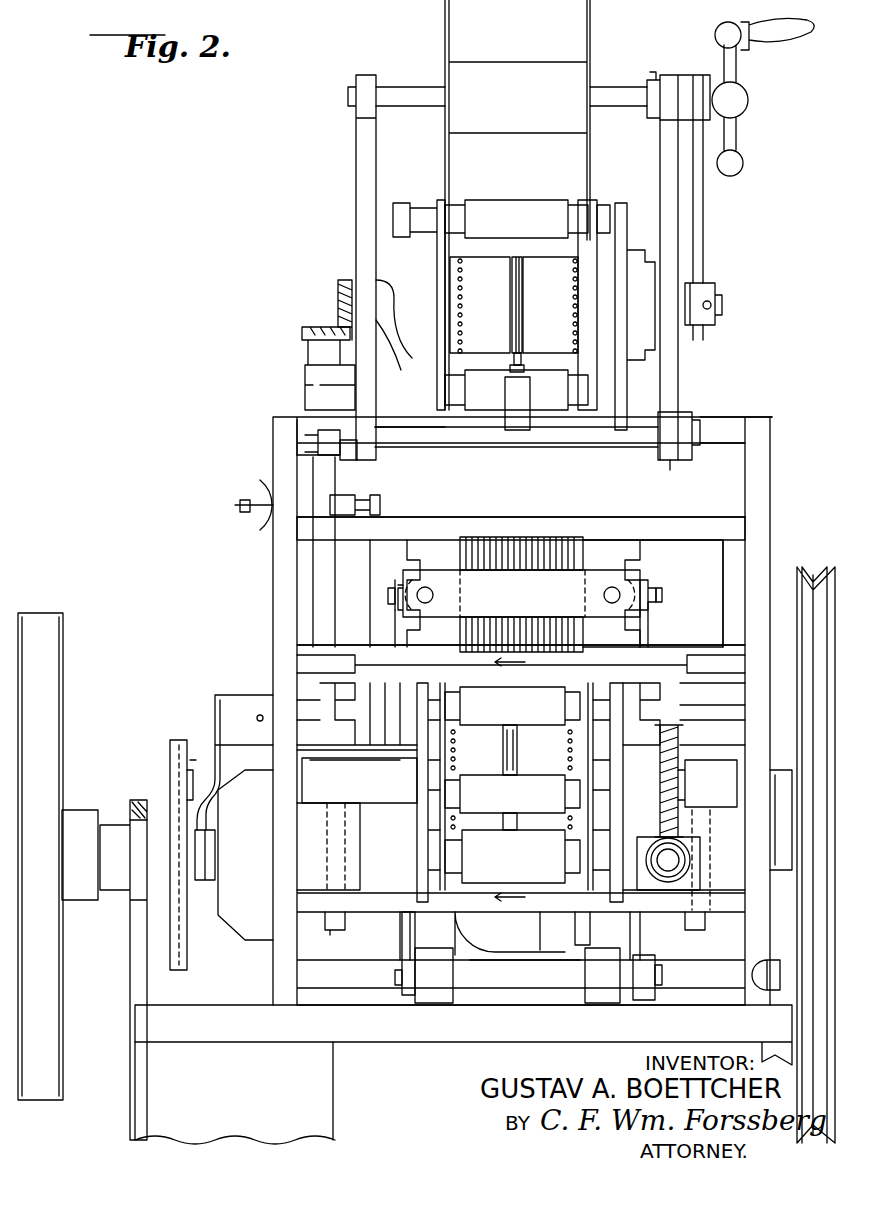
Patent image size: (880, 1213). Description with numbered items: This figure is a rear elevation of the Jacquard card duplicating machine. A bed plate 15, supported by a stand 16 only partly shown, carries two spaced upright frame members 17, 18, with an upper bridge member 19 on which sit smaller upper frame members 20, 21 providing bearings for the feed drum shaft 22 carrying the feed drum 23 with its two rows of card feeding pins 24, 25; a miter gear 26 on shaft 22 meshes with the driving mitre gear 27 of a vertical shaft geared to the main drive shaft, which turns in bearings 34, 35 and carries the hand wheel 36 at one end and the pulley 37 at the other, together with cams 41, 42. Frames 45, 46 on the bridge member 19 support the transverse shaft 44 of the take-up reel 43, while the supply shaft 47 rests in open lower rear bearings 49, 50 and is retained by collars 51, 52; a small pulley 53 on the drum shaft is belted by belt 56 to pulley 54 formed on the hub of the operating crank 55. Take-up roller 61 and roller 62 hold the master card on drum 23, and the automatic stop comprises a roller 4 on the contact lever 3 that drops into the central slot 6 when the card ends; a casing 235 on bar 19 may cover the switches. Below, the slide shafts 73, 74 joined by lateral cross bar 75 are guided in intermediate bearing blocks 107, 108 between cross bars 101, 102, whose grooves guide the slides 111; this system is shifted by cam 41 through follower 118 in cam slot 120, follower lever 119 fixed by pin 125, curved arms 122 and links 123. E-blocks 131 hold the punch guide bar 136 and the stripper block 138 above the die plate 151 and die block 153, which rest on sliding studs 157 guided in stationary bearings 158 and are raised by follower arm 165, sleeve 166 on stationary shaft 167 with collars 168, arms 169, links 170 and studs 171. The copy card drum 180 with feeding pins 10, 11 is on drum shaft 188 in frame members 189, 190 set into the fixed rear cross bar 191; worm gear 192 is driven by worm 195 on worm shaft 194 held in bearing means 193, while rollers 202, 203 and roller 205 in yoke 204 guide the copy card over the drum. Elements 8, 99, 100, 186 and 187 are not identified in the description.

The contact lever 3 is at (512, 362).
The roller 4 is at (523, 366).
The central slot 6 is at (517, 259).
The pin 8 is at (659, 588).
The card feeding pins 10 is at (460, 742).
The card feeding pins 11 is at (567, 739).
The bed plate 15 is at (462, 1044).
The stand 16 is at (333, 1107).
The upright frame member 17 is at (770, 463).
The upright frame member 18 is at (284, 582).
The upper front plate or bridge member 19 is at (722, 439).
The upper frame member 20 is at (626, 204).
The upper frame member 21 is at (426, 202).
The feed drum shaft 22 is at (723, 306).
The feed drum 23 is at (516, 333).
The card feeding pins 24 is at (572, 286).
The card feeding pins 25 is at (464, 278).
The miter gear 26 is at (340, 284).
The driving mitre gear 27 is at (322, 326).
The bearing 34 is at (772, 770).
The bearing 35 is at (220, 930).
The hand wheel 36 is at (63, 634).
The pulley 37 is at (808, 571).
The cam 41 is at (168, 745).
The cam 42 is at (586, 938).
The take-up reel 43 is at (516, 68).
The transverse shaft 44 is at (616, 90).
The frame 45 is at (668, 168).
The frame 46 is at (363, 169).
The supply shaft 47 is at (467, 446).
The open lower rear bearing 49 is at (660, 463).
The open lower rear bearing 50 is at (375, 457).
The collar 51 is at (684, 464).
The collar 52 is at (350, 464).
The small pulley 53 is at (714, 284).
The pulley 54 is at (686, 74).
The operating crank 55 is at (784, 44).
The belt 56 is at (703, 221).
The take-up roller 61 is at (539, 393).
The roller 62 is at (526, 203).
The slide shaft 73 is at (604, 595).
The slide shaft 74 is at (433, 596).
The lateral cross bar 75 is at (637, 575).
The side plate 99 is at (725, 584).
The side plate 100 is at (300, 590).
The cross bar 101 is at (680, 518).
The cross bar 102 is at (671, 647).
The intermediate bearing block 107 is at (616, 540).
The intermediate bearing block 108 is at (426, 549).
The movable plates or slides 111 is at (500, 537).
The follower 118 is at (190, 878).
The follower lever 119 is at (215, 708).
The cam slot 120 is at (192, 748).
The curved arm 122 is at (395, 628).
The link 123 is at (398, 579).
The pin 125 is at (260, 714).
The E-block 131 is at (521, 663).
The punch guide bar 136 is at (686, 694).
The stripper bar or block 138 is at (357, 714).
The die plate 151 is at (396, 760).
The die block 153 is at (357, 776).
The vertical sliding stud 157 is at (334, 930).
The stationary bearing 158 is at (728, 930).
The follower arm 165 is at (456, 922).
The elongated sleeve 166 is at (506, 962).
The stationary shaft 167 is at (732, 988).
The collar 168 is at (402, 1002).
The arm 169 is at (440, 1002).
The link 170 is at (398, 925).
The stud 171 is at (395, 984).
The drum 180 is at (534, 750).
The rod 186 is at (130, 974).
The nut 187 is at (128, 812).
The drum shaft 188 is at (686, 786).
The frame member 189 is at (422, 768).
The frame member 190 is at (625, 904).
The fixed rear cross bar 191 is at (552, 912).
The worm gear 192 is at (681, 734).
The bearing means 193 is at (725, 868).
The worm shaft 194 is at (674, 862).
The worm 195 is at (680, 850).
The roller 202 is at (512, 706).
The roller 203 is at (512, 794).
The yoke 204 is at (445, 842).
The additional roller 205 is at (512, 856).
The casing 235 is at (526, 440).